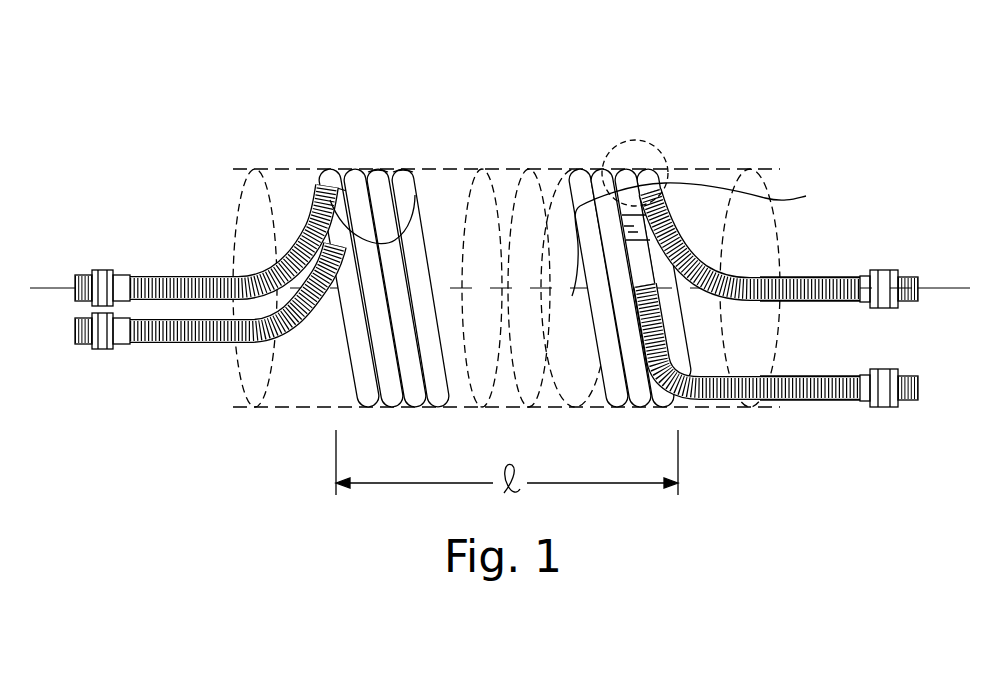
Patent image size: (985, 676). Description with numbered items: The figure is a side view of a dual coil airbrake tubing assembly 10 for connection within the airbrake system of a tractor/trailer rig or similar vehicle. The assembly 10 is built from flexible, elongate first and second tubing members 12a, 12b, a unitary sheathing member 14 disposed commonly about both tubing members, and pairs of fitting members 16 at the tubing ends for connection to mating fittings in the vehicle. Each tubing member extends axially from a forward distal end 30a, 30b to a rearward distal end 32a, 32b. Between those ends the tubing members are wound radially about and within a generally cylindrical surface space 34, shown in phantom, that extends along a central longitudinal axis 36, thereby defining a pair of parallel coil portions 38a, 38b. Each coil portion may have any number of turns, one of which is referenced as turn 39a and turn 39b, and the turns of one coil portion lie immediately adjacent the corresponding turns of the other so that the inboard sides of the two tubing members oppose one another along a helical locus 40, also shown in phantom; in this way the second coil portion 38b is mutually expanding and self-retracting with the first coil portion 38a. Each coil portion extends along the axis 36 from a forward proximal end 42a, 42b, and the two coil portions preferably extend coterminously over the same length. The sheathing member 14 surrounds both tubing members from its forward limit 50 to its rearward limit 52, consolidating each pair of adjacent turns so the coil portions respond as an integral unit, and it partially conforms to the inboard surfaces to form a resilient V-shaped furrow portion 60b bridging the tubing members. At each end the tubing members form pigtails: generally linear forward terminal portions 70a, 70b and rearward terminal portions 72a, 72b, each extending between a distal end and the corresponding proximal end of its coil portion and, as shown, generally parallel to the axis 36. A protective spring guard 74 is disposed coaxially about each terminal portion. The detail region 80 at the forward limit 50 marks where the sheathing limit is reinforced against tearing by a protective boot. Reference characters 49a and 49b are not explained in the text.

The dual coil airbrake tubing assembly 10 is at (858, 100).
The first tubing member 12a is at (713, 195).
The second tubing member 12b is at (565, 264).
The unitary sheathing member 14 is at (624, 173).
The fitting members 16 is at (75, 283).
The forward distal end of first tubing member 30a is at (838, 300).
The forward distal end of second tubing member 30b is at (847, 403).
The rearward distal end of first tubing member 32a is at (137, 280).
The rearward distal end of second tubing member 32b is at (140, 347).
The cylindrical surface space 34 is at (268, 168).
The central longitudinal axis 36 is at (947, 293).
The first coil portion 38a is at (437, 410).
The second coil portion 38b is at (417, 408).
The turn of first coil portion 39a is at (598, 172).
The turn of second coil portion 39b is at (576, 170).
The helical locus 40 is at (497, 167).
The forward proximal end of first coil portion 42a is at (673, 215).
The forward proximal end of second coil portion 42b is at (655, 282).
The coil turn 49a is at (415, 197).
The coil turn 49b is at (377, 183).
The forward limit of sheathing member 50 is at (657, 190).
The rearward limit of sheathing member 52 is at (320, 190).
The V-shaped furrow portion 60b is at (373, 360).
The forward terminal portion of first tubing member 70a is at (800, 303).
The forward terminal portion of second tubing member 70b is at (787, 407).
The rearward terminal portion of first tubing member 72a is at (182, 283).
The rearward terminal portion of second tubing member 72b is at (177, 347).
The protective spring guard 74 is at (260, 280).
The detail region 80 is at (652, 142).